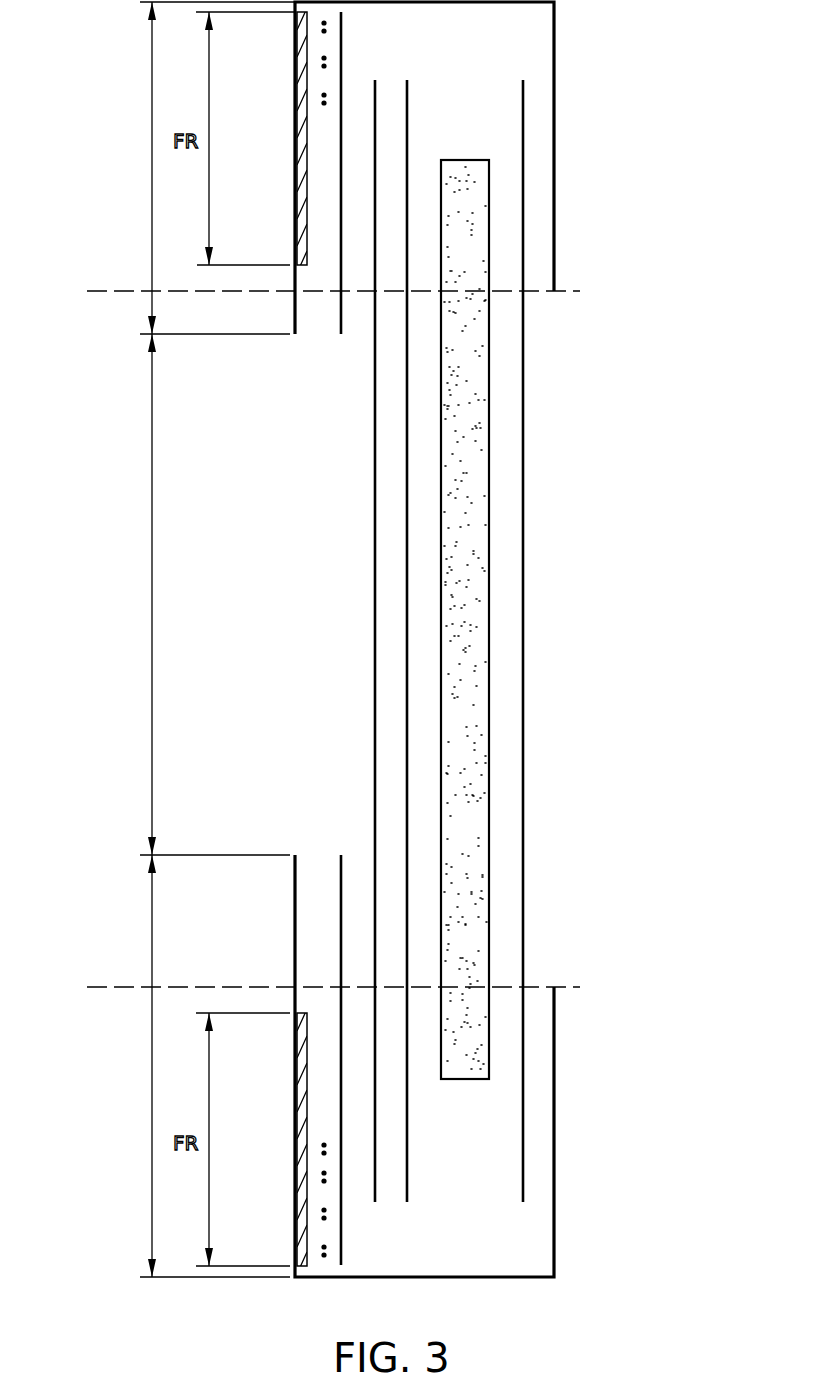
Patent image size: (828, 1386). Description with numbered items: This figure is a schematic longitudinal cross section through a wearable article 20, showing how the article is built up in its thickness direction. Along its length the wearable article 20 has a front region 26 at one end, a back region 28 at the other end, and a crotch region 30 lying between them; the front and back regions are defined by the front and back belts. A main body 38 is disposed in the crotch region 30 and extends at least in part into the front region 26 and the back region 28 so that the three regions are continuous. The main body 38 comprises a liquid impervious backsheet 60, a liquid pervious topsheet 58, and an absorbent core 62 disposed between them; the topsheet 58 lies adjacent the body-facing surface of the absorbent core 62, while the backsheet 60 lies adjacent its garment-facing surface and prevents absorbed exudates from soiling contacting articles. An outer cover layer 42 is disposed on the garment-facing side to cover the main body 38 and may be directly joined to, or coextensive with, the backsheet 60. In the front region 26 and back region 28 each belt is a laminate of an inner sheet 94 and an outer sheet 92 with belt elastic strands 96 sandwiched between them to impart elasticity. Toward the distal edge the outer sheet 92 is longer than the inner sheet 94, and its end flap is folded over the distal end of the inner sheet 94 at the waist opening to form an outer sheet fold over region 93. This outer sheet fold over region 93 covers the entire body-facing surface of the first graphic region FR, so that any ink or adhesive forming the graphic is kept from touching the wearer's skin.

The wearable article 20 is at (597, 284).
The front region 26 is at (150, 175).
The back region 28 is at (150, 1095).
The crotch region 30 is at (150, 598).
The main body 38 is at (530, 493).
The outer cover layer 42 is at (373, 698).
The liquid pervious topsheet 58 is at (525, 640).
The liquid impervious backsheet 60 is at (405, 488).
The absorbent core 62 is at (465, 160).
The outer sheet 92 is at (295, 67).
The outer sheet fold over region 93 is at (557, 153).
The inner sheet 94 is at (343, 70).
The belt elastic strands 96 is at (327, 23).